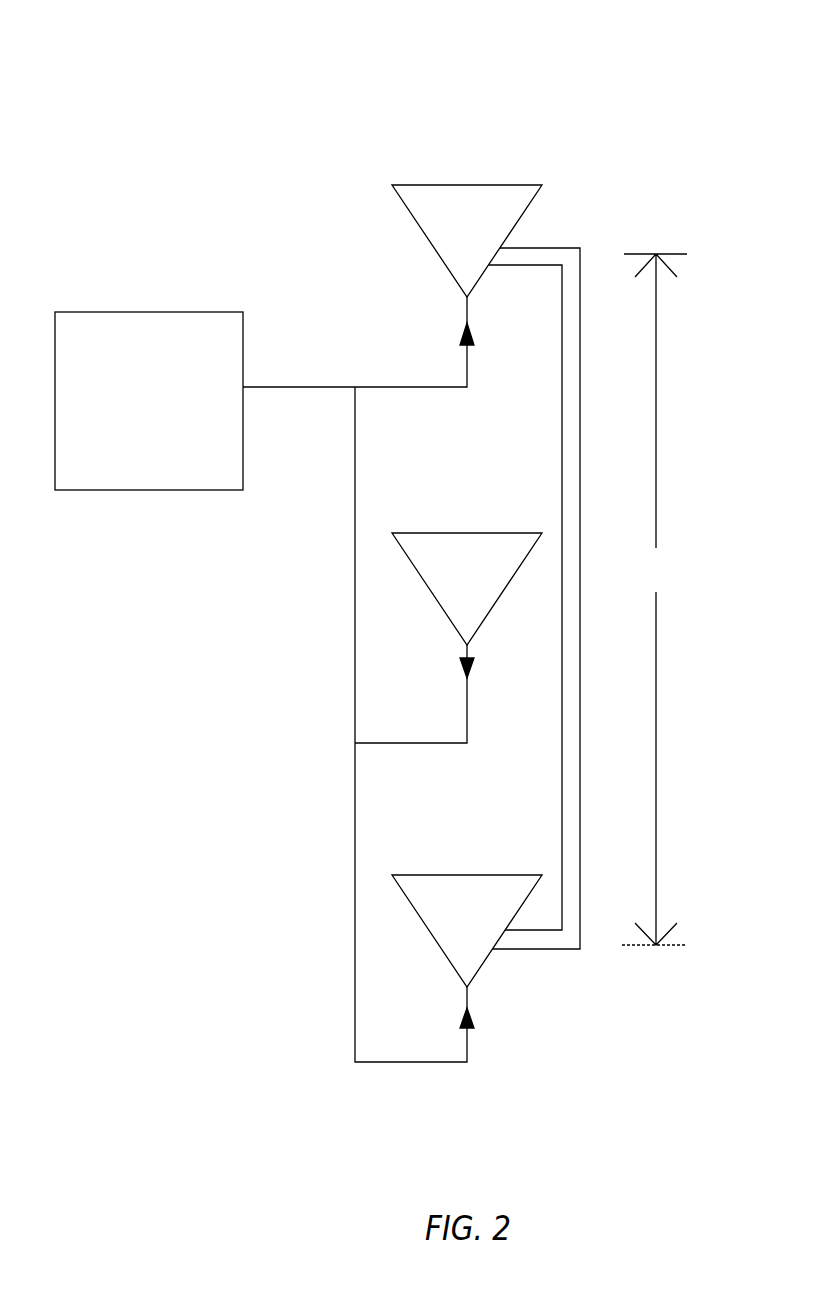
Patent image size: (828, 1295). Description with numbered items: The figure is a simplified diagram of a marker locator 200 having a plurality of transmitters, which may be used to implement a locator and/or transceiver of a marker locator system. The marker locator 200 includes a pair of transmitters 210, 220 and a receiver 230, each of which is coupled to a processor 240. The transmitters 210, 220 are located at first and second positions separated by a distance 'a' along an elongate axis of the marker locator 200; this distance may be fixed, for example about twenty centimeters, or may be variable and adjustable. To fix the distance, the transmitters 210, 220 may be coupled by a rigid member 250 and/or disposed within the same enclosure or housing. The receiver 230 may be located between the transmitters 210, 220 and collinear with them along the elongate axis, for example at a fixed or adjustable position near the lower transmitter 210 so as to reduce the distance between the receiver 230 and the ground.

The marker locator 200 is at (136, 50).
The transmitter 210 is at (447, 873).
The transmitter 220 is at (430, 182).
The receiver 230 is at (447, 532).
The processor 240 is at (149, 401).
The rigid member 250 is at (561, 246).